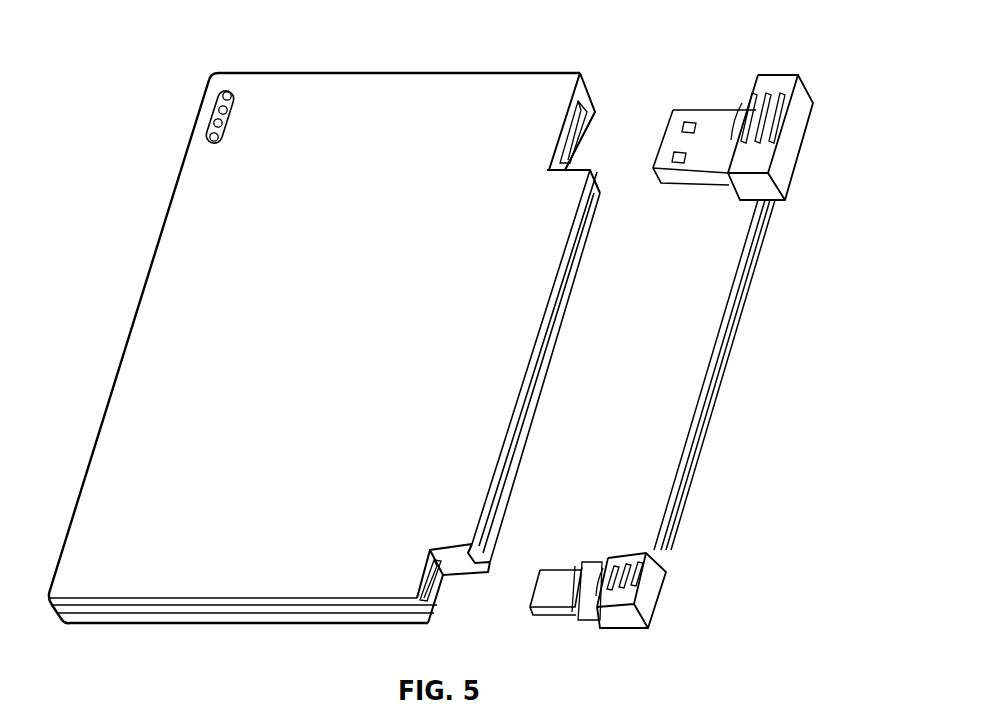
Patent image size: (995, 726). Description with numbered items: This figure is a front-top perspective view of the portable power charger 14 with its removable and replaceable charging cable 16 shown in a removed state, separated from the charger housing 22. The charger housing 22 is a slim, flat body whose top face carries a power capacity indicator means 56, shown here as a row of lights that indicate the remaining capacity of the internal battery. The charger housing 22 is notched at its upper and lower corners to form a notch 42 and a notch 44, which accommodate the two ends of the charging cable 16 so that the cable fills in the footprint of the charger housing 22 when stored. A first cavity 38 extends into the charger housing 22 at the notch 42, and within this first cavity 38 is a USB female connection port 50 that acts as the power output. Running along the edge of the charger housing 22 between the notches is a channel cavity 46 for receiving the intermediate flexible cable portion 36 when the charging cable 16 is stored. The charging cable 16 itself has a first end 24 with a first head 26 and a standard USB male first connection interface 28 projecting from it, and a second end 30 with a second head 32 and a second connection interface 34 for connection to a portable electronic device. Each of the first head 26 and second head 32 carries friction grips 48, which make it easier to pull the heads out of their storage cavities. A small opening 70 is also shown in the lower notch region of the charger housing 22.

The charger 14 is at (353, 351).
The charger housing 22 is at (152, 318).
The power capacity indicator means 56 is at (246, 68).
The notch 42 is at (602, 118).
The first cavity 38 is at (608, 131).
The USB female connection port 50 is at (575, 130).
The channel cavity 46 is at (563, 337).
The notch 44 is at (464, 603).
The lower opening 70 is at (448, 590).
The charging cable 16 is at (695, 350).
The intermediate flexible cable portion 36 is at (735, 338).
The first end 24 is at (758, 142).
The first head 26 is at (789, 171).
The first connection interface 28 is at (693, 176).
The friction grips 48 is at (769, 92).
The second end 30 is at (625, 619).
The second head 32 is at (617, 626).
The second connection interface 34 is at (553, 598).